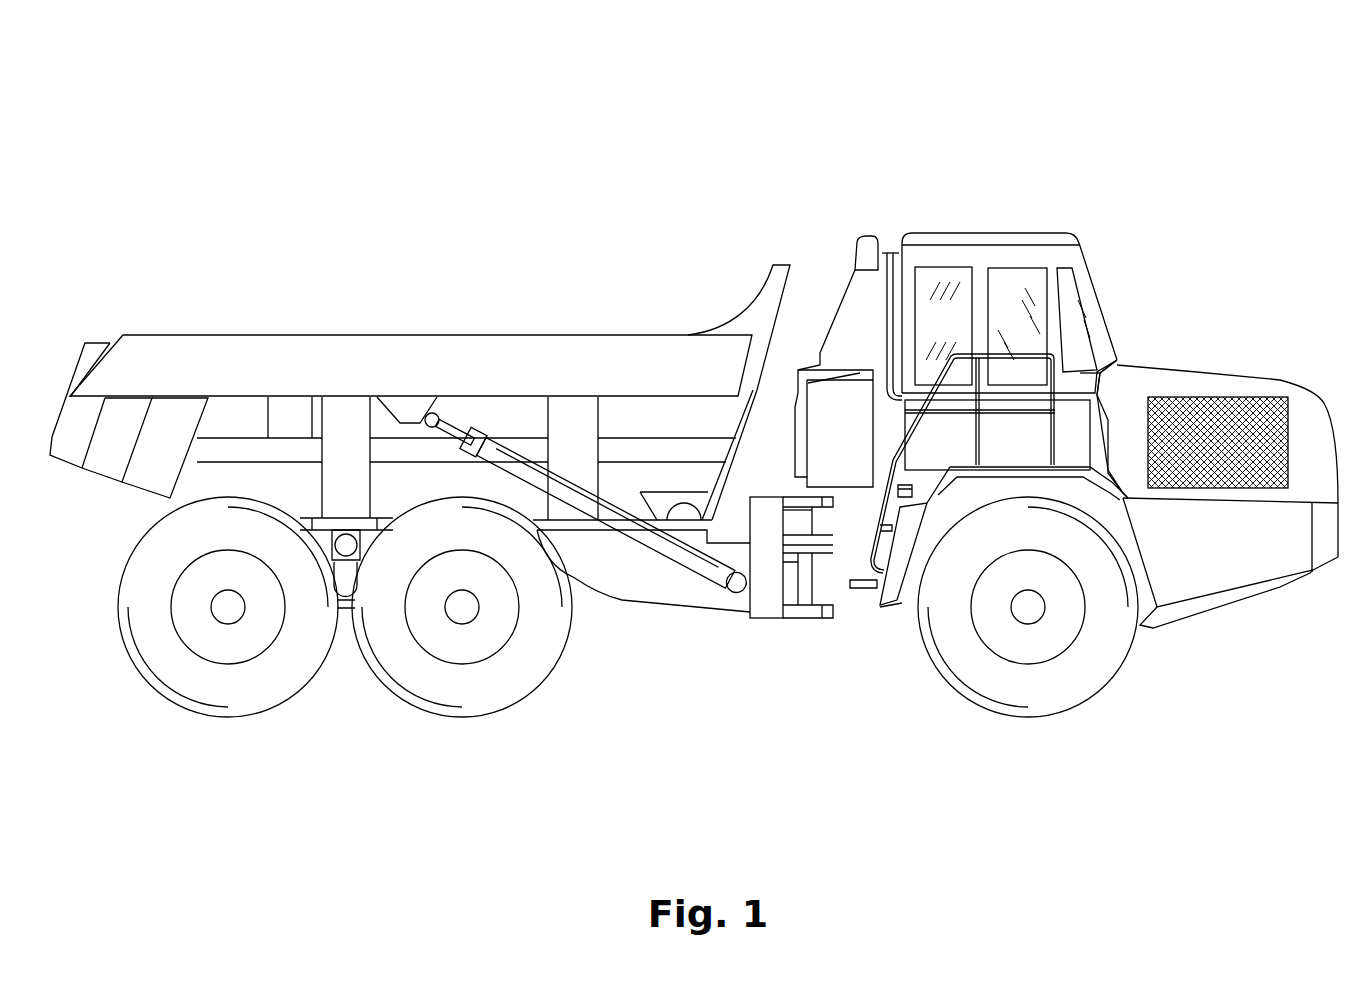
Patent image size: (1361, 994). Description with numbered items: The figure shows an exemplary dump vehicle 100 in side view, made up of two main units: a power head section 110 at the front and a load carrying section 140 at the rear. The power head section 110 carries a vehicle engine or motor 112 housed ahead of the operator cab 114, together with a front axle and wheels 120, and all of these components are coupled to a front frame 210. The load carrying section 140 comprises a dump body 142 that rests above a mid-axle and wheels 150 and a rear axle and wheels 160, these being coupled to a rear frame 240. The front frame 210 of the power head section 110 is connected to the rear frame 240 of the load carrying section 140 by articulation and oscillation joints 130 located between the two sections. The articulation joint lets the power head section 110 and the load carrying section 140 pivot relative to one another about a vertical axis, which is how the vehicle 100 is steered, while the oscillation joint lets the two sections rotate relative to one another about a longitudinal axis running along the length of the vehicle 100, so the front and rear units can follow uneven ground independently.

The dump vehicle 100 is at (884, 138).
The power head section 110 is at (1106, 208).
The vehicle engine or motor 112 is at (1233, 351).
The operator cab 114 is at (990, 232).
The front axle and wheels 120 is at (1061, 724).
The articulation and oscillation joints 130 is at (818, 661).
The load carrying section 140 is at (310, 262).
The dump body 142 is at (473, 330).
The mid-axle and wheels 150 is at (501, 724).
The rear axle and wheels 160 is at (190, 724).
The front frame 210 is at (1276, 624).
The rear frame 240 is at (642, 616).